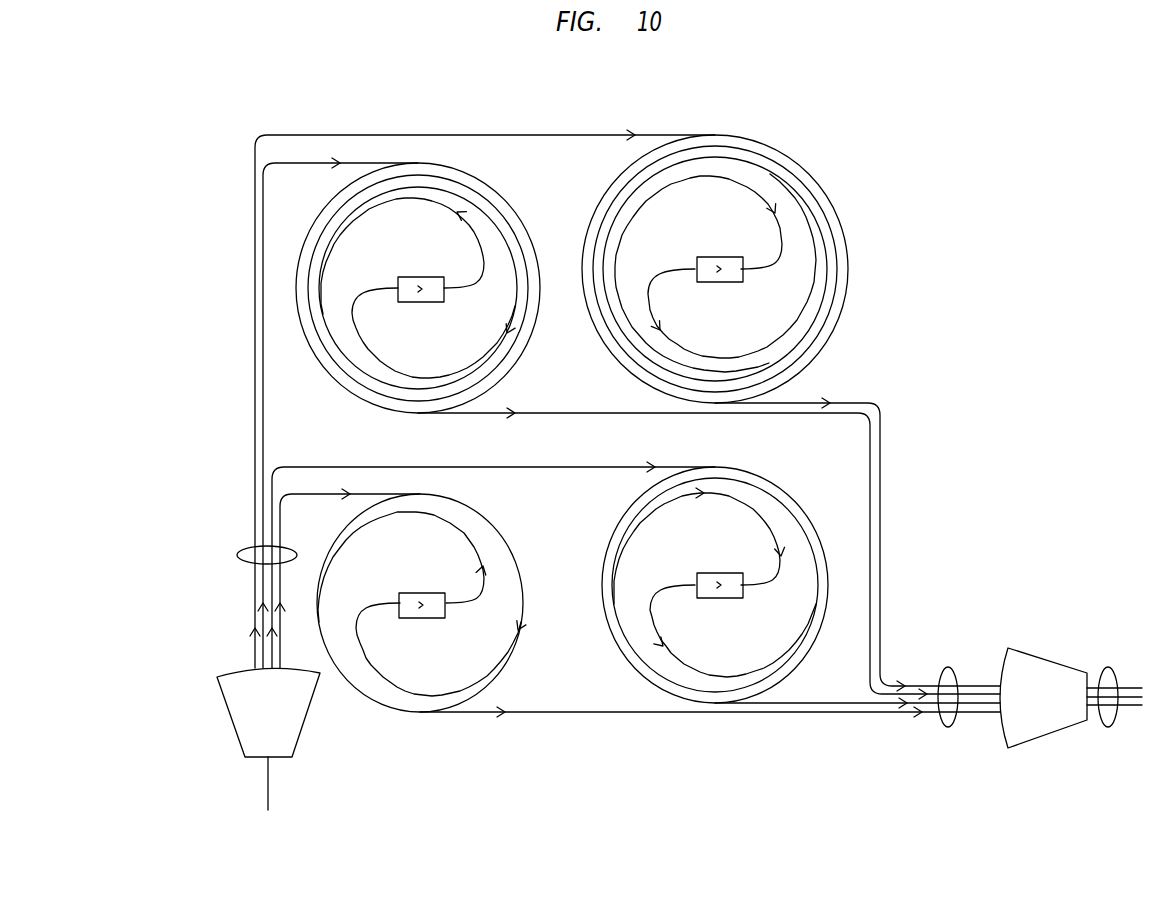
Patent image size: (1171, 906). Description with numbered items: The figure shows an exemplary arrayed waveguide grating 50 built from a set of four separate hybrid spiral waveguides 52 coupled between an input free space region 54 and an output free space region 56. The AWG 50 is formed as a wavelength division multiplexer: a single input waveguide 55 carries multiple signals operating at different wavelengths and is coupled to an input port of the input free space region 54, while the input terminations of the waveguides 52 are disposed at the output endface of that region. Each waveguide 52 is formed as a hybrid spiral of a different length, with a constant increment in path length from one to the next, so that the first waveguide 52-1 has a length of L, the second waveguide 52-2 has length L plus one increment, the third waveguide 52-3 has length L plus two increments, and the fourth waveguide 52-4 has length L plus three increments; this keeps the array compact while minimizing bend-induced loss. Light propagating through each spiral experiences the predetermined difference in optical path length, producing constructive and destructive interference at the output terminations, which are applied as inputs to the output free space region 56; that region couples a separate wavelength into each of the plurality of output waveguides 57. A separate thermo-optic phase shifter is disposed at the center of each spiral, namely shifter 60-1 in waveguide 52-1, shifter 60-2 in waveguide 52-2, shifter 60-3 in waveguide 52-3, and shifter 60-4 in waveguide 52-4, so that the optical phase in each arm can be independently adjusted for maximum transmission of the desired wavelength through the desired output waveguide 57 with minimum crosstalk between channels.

The arrayed waveguide grating 50 is at (211, 96).
The hybrid spiral waveguide 52 is at (242, 548).
The first waveguide 52-1 is at (500, 533).
The second waveguide 52-2 is at (638, 508).
The third waveguide 52-3 is at (500, 186).
The fourth waveguide 52-4 is at (822, 186).
The input free space region 54 is at (228, 673).
The input waveguide 55 is at (270, 773).
The output free space region 56 is at (1027, 653).
The output waveguide 57 is at (1115, 674).
The thermo-optic phase shifter 60-1 is at (421, 592).
The thermo-optic phase shifter 60-2 is at (720, 572).
The thermo-optic phase shifter 60-3 is at (421, 277).
The thermo-optic phase shifter 60-4 is at (719, 257).